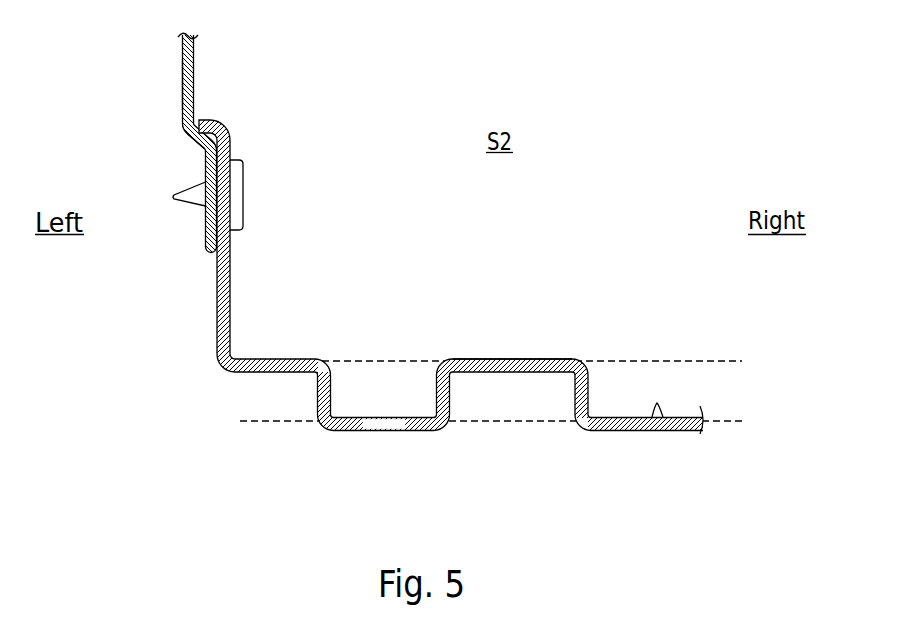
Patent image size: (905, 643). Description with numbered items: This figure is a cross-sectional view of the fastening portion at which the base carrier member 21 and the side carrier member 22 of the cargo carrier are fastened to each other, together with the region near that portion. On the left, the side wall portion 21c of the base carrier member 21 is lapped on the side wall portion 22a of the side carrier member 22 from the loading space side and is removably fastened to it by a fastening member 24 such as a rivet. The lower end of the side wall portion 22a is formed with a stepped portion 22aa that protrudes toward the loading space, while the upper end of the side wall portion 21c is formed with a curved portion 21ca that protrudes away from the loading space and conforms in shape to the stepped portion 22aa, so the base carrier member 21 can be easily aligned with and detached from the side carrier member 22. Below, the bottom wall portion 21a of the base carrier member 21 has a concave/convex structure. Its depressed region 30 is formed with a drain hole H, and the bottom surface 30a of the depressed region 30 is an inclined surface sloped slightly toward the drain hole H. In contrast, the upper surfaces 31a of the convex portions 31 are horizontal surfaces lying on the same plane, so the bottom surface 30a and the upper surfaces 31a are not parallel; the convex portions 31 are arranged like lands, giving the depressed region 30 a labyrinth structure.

The base carrier member 21 is at (242, 373).
The bottom wall portion 21a is at (577, 431).
The side wall portion 21c is at (231, 268).
The curved portion 21ca is at (213, 121).
The side carrier member 22 is at (181, 58).
The side wall portion 22a is at (182, 80).
The stepped portion 22aa is at (204, 150).
The fastening member 24 is at (244, 193).
The depressed region 30 is at (420, 417).
The bottom surface 30a is at (657, 414).
The convex portion 31 is at (501, 358).
The upper surface 31a is at (543, 358).
The drain hole H is at (388, 431).